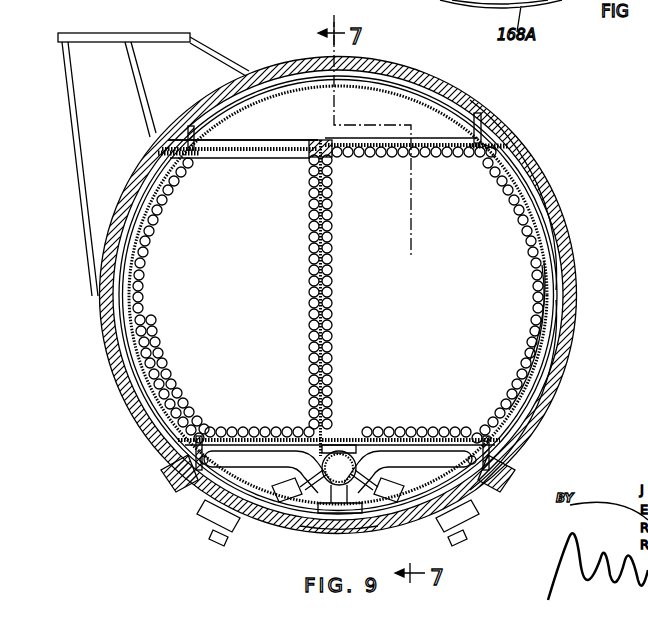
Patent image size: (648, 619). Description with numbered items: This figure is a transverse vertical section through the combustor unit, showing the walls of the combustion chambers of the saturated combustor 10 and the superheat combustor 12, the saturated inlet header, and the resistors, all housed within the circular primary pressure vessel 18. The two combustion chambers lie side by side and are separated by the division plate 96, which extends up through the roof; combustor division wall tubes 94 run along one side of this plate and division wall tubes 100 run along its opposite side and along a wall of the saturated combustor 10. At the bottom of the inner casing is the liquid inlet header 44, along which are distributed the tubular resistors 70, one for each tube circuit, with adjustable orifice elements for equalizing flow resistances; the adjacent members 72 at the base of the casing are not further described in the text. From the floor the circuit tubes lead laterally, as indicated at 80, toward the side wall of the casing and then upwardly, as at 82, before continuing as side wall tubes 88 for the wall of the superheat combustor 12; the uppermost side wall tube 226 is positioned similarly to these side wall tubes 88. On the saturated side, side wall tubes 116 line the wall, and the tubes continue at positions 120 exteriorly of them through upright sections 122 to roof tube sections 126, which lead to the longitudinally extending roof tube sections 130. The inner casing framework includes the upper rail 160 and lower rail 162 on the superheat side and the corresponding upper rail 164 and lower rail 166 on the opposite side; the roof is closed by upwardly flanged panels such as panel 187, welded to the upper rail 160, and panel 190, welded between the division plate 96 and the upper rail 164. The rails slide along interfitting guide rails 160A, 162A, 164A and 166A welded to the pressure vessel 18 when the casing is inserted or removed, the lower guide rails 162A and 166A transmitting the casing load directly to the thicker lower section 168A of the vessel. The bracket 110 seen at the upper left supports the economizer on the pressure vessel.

The saturated combustor chamber 10 is at (251, 308).
The superheat combustor 12 is at (426, 308).
The primary pressure vessel 18 is at (566, 226).
The liquid inlet header 44 is at (342, 450).
The tubular resistors 70 is at (286, 498).
The troughs 72 is at (242, 452).
The laterally extending tube circuits 80 is at (396, 437).
The upwardly extending tube sections 82 is at (542, 333).
The side wall tubes 88 is at (512, 204).
The combustor division wall tubes 94 is at (330, 211).
The division plate 96 is at (333, 246).
The division wall tubes 100 is at (311, 203).
The support bracket 110 is at (106, 62).
The side wall tubes 116 is at (207, 432).
The tube positions exterior of side wall tubes 120 is at (130, 347).
The upright tube sections 122 is at (160, 252).
The roof tube sections 126 is at (222, 152).
The longitudinally extending roof tube sections 130 is at (436, 158).
The upper rail 160 is at (528, 158).
The guide rail 160A is at (484, 123).
The lower rail 162 is at (552, 413).
The lower guide rail 162A is at (500, 452).
The upper rail 164 is at (152, 153).
The guide rail 164A is at (201, 97).
The lower rail 166 is at (180, 438).
The lower guide rail 166A is at (190, 456).
The thicker lower section of the pressure vessel 168A is at (318, 528).
The upwardly flanged panel 187 is at (382, 147).
The metallic panel 190 is at (272, 148).
The uppermost side wall tube 226 is at (492, 140).